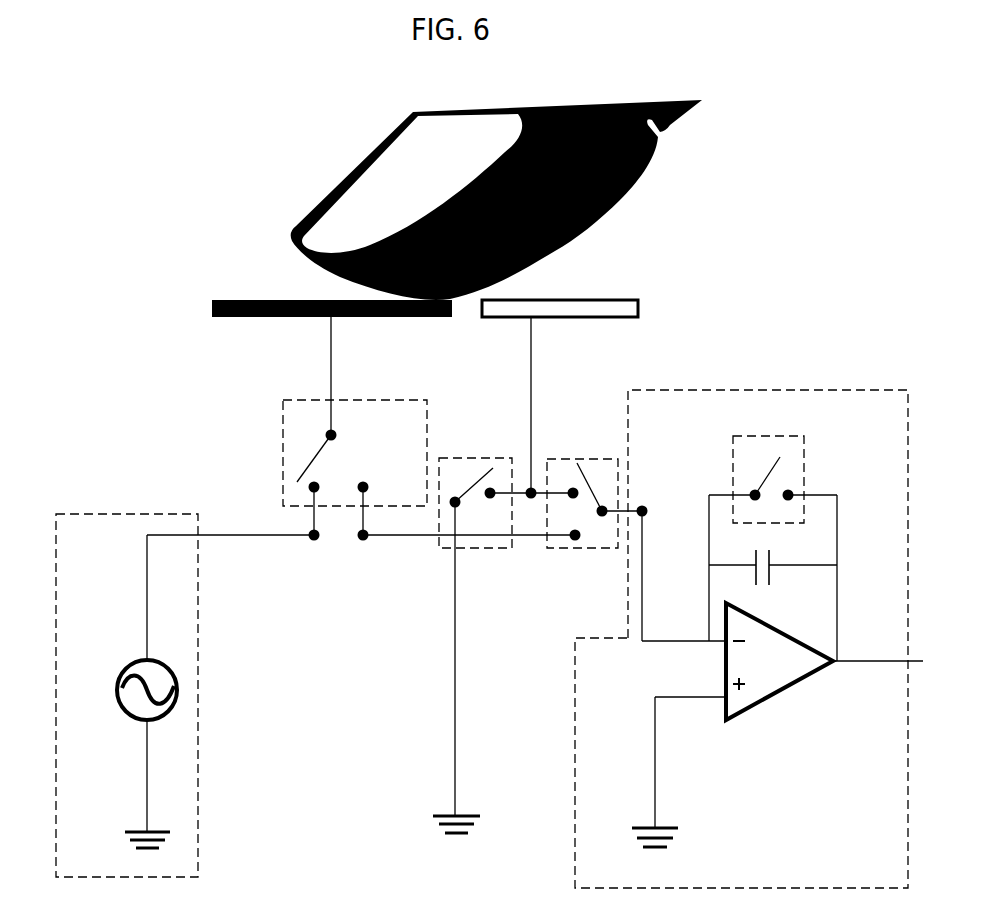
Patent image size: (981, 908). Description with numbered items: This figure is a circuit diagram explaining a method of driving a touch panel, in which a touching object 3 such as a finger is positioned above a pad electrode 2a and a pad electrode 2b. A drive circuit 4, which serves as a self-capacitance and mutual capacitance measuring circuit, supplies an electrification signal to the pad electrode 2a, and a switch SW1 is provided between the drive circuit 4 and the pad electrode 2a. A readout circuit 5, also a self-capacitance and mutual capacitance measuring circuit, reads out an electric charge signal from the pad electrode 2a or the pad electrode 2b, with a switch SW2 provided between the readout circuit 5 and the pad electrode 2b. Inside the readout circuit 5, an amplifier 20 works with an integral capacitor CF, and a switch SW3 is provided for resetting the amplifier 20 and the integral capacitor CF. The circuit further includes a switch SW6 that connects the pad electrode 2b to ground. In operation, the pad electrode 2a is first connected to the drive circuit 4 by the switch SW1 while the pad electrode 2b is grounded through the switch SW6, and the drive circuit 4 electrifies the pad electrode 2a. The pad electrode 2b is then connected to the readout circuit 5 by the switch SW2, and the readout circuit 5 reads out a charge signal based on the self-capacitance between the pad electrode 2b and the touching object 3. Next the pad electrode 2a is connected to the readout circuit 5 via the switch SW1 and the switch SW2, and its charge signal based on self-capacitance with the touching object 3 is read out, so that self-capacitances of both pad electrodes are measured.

The touching object 3 is at (338, 195).
The pad electrode 2a is at (230, 317).
The pad electrode 2b is at (620, 317).
The drive circuit 4 is at (55, 557).
The readout circuit 5 is at (749, 609).
The amplifier 20 is at (780, 692).
The switch SW1 is at (395, 397).
The switch SW2 is at (563, 455).
The switch SW3 is at (806, 455).
The switch SW6 is at (477, 453).
The integral capacitor CF is at (770, 573).